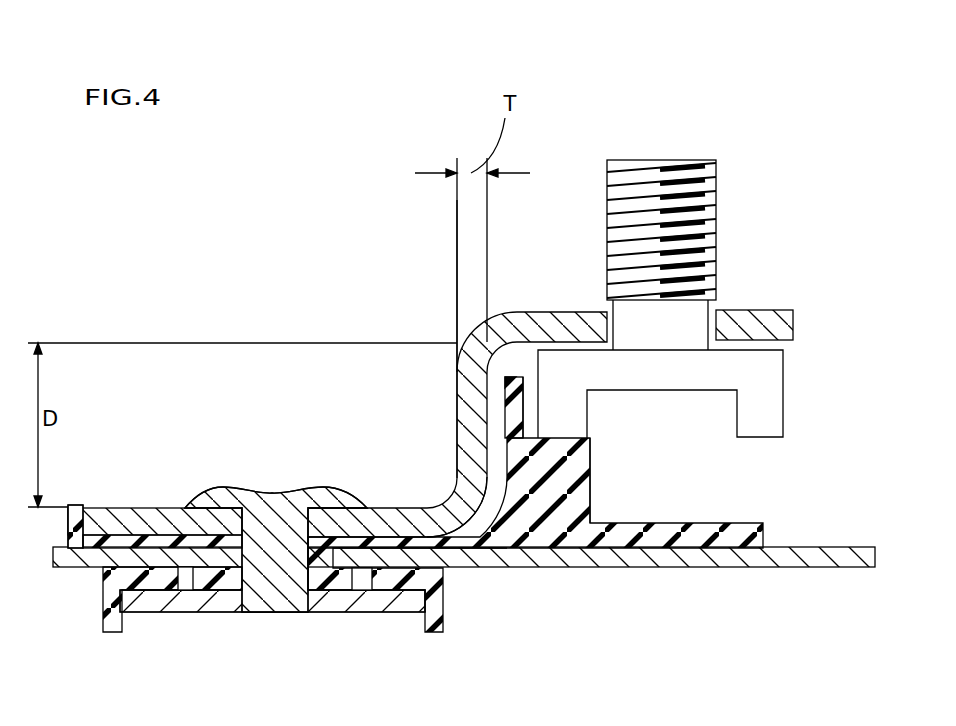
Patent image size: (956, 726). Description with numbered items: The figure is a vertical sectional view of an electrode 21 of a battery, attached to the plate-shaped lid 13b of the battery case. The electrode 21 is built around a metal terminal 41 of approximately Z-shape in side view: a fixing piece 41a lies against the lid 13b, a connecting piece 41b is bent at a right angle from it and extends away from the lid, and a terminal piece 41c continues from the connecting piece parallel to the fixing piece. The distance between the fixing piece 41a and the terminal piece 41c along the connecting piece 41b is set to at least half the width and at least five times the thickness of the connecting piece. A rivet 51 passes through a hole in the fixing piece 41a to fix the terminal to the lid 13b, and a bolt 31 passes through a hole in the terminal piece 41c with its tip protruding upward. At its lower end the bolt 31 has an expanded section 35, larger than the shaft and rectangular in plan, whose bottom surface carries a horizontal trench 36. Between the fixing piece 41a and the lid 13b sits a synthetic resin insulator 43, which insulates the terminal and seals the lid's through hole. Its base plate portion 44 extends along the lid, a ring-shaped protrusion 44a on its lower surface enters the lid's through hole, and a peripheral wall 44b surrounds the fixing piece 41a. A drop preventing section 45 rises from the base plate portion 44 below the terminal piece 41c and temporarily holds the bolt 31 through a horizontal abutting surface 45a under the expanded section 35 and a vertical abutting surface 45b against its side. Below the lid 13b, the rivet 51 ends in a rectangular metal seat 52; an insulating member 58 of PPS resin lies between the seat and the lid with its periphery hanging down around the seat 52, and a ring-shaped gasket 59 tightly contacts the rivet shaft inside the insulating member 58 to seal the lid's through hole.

The lid 13b is at (606, 560).
The electrode 21 is at (445, 283).
The bolt 31 is at (661, 160).
The expanded section 35 is at (527, 435).
The trench 36 is at (613, 412).
The metal terminal 41 is at (453, 420).
The fixing piece 41a is at (148, 520).
The connecting piece 41b is at (552, 422).
The terminal piece 41c is at (773, 320).
The insulator 43 is at (775, 500).
The base plate portion 44 is at (478, 542).
The ring-shaped protrusion 44a is at (318, 592).
The peripheral wall 44b is at (76, 504).
The drop preventing section 45 is at (570, 482).
The horizontal abutting surface 45a is at (592, 438).
The vertical abutting surface 45b is at (522, 386).
The rivet 51 is at (273, 522).
The seat 52 is at (177, 600).
The insulating member 58 is at (110, 628).
The gasket 59 is at (213, 592).